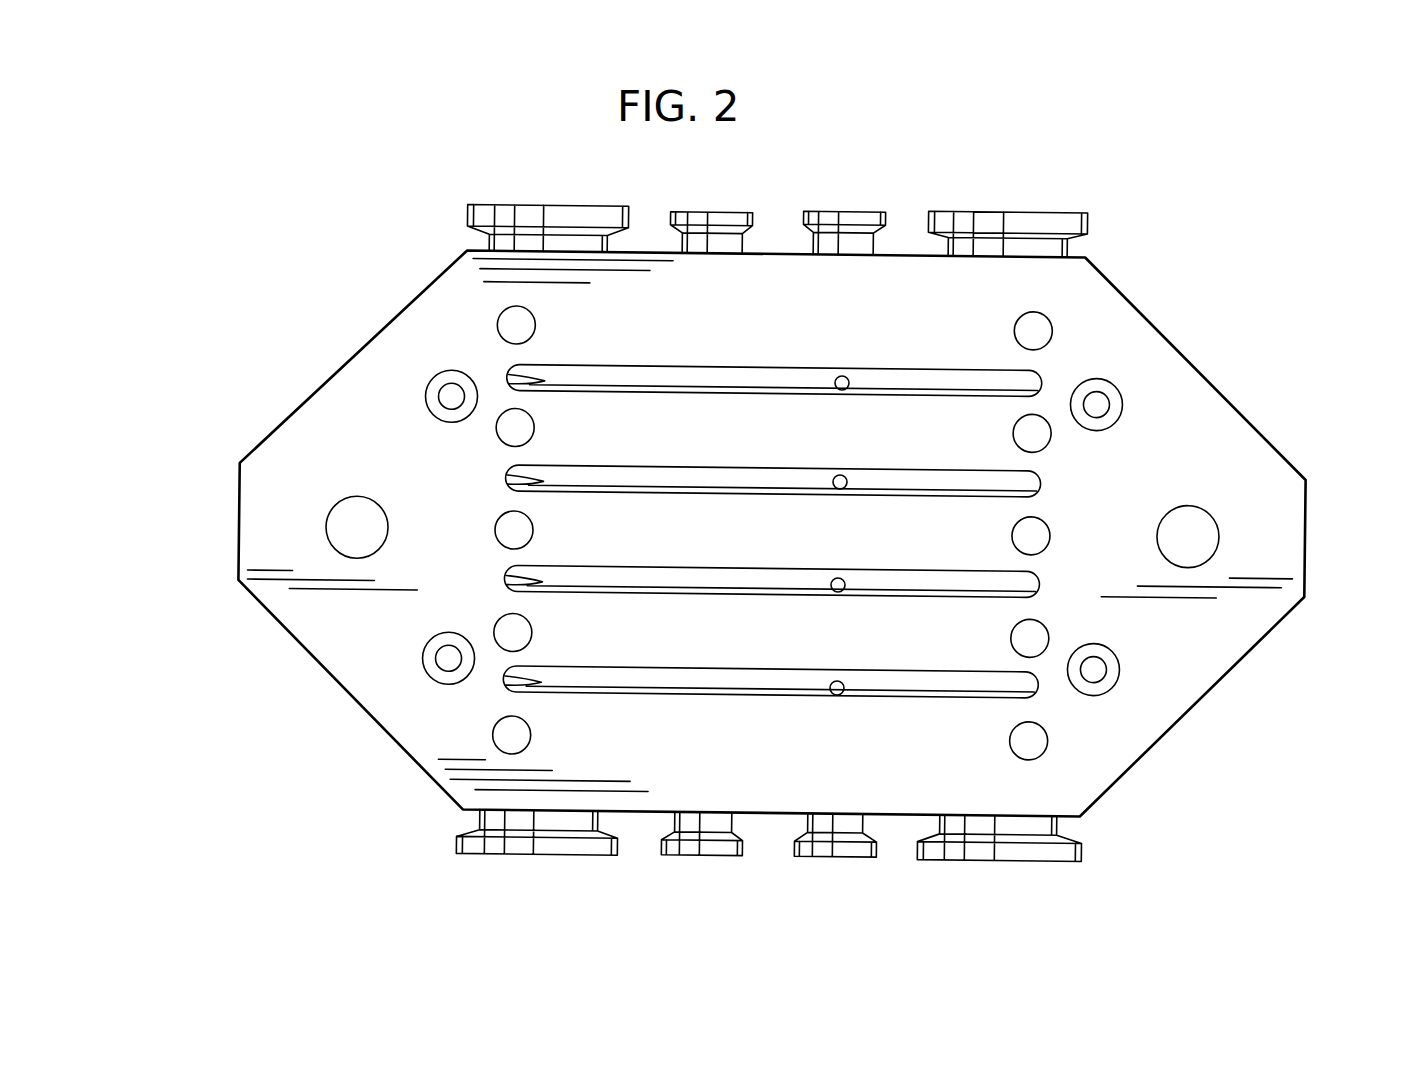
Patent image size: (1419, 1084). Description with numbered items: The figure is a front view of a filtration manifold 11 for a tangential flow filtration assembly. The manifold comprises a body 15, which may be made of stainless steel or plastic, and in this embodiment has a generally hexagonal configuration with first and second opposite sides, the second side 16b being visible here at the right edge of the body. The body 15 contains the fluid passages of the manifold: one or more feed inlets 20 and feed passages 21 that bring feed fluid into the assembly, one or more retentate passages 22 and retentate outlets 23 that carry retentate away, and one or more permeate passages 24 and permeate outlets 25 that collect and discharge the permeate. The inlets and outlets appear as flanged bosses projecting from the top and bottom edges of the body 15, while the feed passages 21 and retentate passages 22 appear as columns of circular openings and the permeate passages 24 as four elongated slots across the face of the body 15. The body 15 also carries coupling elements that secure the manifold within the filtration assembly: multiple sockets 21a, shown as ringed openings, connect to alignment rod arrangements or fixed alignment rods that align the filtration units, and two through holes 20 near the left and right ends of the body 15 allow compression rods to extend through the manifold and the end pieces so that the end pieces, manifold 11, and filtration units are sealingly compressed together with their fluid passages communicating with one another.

The filtration manifold 11 is at (1119, 270).
The body 15 is at (342, 423).
The second side 16b is at (1190, 642).
The feed inlet 20 is at (1005, 212).
The feed passage 21 is at (1037, 432).
The socket 21a is at (437, 380).
The retentate passage 22 is at (512, 428).
The retentate outlet 23 is at (580, 205).
The permeate passage 24 is at (895, 380).
The permeate outlet 25 is at (730, 210).